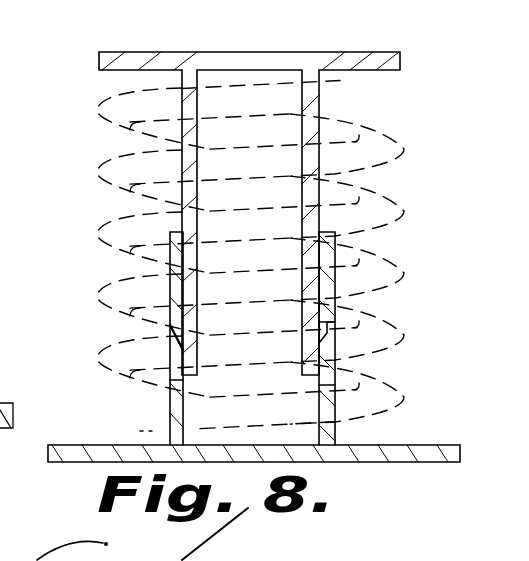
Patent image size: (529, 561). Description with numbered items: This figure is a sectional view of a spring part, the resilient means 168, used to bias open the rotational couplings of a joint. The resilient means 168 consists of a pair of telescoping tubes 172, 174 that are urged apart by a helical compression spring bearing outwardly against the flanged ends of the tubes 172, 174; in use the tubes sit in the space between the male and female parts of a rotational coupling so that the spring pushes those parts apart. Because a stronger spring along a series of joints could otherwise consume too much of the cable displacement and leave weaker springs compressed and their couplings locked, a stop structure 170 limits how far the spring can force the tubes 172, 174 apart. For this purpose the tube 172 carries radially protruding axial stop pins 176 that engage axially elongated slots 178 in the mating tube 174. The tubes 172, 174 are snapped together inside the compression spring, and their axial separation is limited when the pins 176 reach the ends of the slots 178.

The resilient means 168 is at (98, 232).
The stop structure 170 is at (326, 311).
The tube 172 is at (312, 91).
The mating tube 174 is at (336, 434).
The axial stop pins 176 is at (183, 333).
The axially elongated slots 178 is at (176, 357).